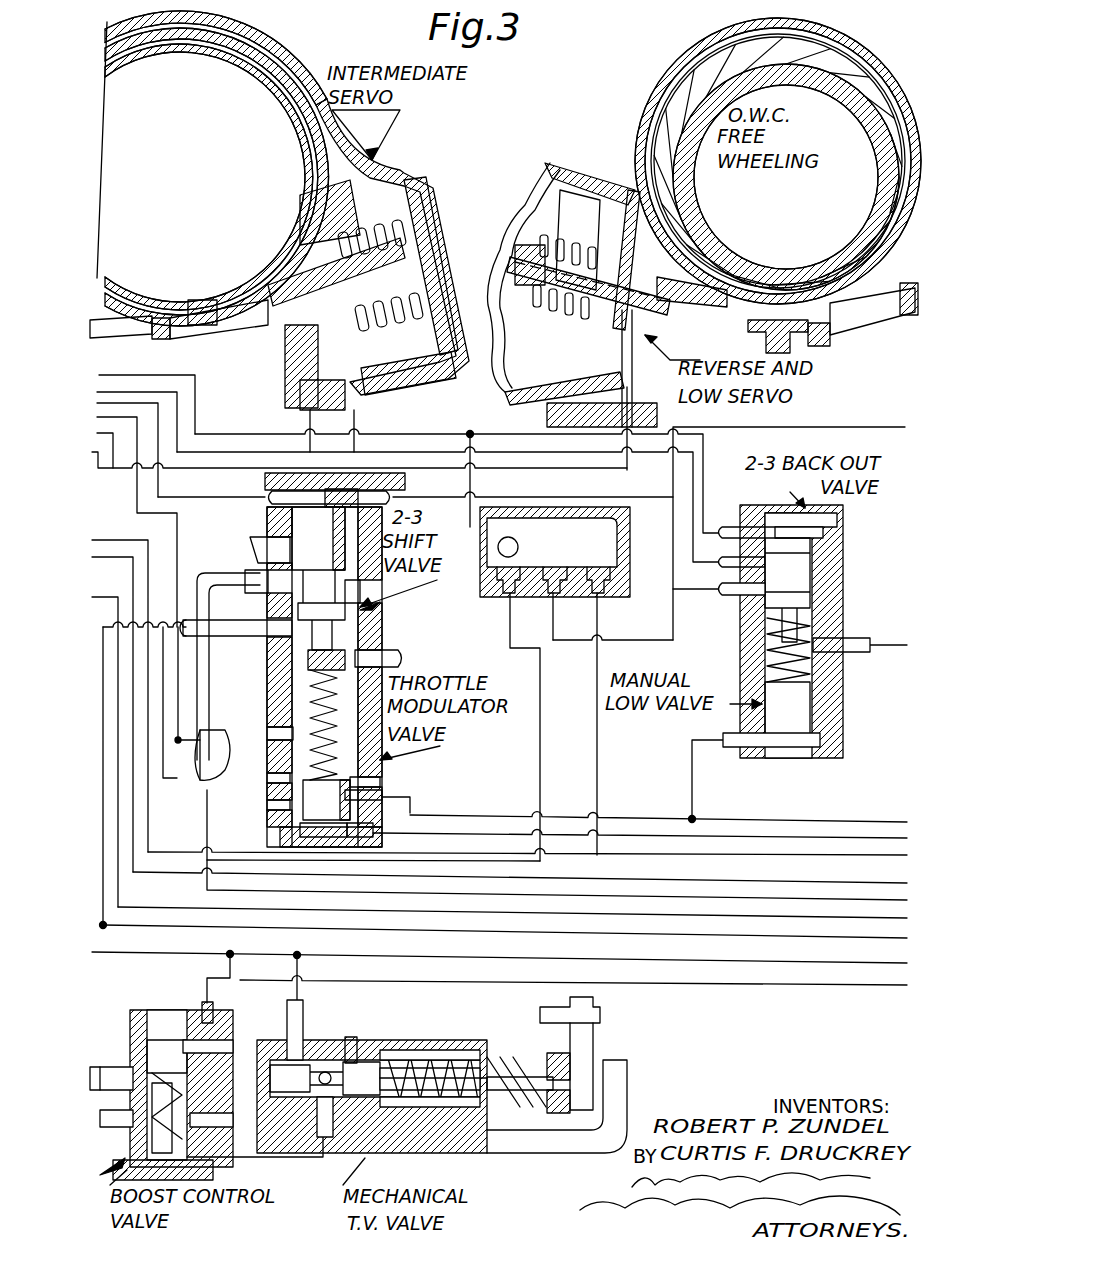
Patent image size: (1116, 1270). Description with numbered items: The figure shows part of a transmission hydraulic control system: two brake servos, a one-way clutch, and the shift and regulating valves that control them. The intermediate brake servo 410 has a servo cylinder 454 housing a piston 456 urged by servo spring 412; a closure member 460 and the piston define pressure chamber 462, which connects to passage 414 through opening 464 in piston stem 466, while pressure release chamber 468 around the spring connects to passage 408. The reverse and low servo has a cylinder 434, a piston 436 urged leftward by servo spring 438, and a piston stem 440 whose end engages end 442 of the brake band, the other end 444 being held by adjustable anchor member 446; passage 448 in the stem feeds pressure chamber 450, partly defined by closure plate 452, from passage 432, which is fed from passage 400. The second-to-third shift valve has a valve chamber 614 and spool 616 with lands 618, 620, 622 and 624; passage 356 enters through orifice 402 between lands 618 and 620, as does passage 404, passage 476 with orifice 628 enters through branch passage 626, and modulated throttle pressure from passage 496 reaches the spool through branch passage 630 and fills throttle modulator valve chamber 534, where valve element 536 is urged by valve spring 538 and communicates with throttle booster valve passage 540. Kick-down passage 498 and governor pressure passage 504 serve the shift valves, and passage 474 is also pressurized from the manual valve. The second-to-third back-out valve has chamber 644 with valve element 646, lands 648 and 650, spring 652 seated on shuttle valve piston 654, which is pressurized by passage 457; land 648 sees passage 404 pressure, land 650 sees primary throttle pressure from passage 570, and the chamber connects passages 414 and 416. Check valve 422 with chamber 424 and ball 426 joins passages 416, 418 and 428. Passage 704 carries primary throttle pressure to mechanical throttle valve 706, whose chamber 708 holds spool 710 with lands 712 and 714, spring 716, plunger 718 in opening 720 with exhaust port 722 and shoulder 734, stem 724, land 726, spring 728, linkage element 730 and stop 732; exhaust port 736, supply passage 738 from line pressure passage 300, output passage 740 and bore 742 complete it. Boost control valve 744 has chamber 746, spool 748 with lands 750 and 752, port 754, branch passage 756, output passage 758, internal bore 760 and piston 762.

The main line pressure passage 300 is at (160, 942).
The passage 356 is at (780, 1000).
The passage 400 is at (148, 910).
The orifice 402 is at (280, 650).
The passage 404 is at (118, 338).
The passage 408 is at (190, 328).
The intermediate brake servo 410 is at (455, 235).
The servo spring 412 is at (300, 250).
The passage 414 is at (300, 405).
The passage 416 is at (510, 600).
The passage 418 is at (598, 600).
The three position check valve 422 is at (600, 540).
The valve chamber 424 is at (605, 567).
The ball valve element 426 is at (518, 547).
The passage 428 is at (162, 856).
The passage 432 is at (240, 490).
The cylinder 434 is at (515, 370).
The piston 436 is at (590, 185).
The servo spring 438 is at (668, 250).
The piston stem 440 is at (690, 255).
The end of the brake band 442 is at (768, 272).
The other end of the brake band 444 is at (860, 330).
The adjustable anchor member 446 is at (870, 318).
The passage 448 is at (700, 275).
The pressure chamber 450 is at (500, 250).
The closure plate 452 is at (530, 180).
The servo cylinder 454 is at (330, 365).
The piston 456 is at (405, 215).
The passage 457 is at (692, 780).
The closure member 460 is at (398, 210).
The pressure chamber 462 is at (415, 205).
The opening 464 is at (300, 340).
The piston stem 466 is at (345, 300).
The pressure release chamber 468 is at (320, 225).
The passage 474 is at (130, 875).
The passage 476 is at (250, 590).
The modulated throttle pressure passage 496 is at (130, 433).
The kick-down pressure passage 498 is at (98, 458).
The governor pressure passage 504 is at (133, 433).
The throttle modulator valve chamber 534 is at (385, 797).
The throttle modulator valve element 536 is at (300, 825).
The valve spring 538 is at (348, 770).
The throttle booster valve passage 540 is at (378, 838).
The passage 570 is at (855, 650).
The valve chamber 614 is at (295, 660).
The 2-3 shift valve spool 616 is at (295, 598).
The valve land 618 is at (295, 700).
The valve land 620 is at (372, 610).
The valve land 622 is at (300, 540).
The valve land 624 is at (270, 494).
The branch passage 626 is at (290, 700).
The flow restricting orifice 628 is at (285, 795).
The branch passage 630 is at (230, 735).
The valve chamber 644 is at (825, 590).
The 2-3 back-out valve element 646 is at (835, 545).
The valve land 648 is at (837, 520).
The valve land 650 is at (835, 565).
The valve spring 652 is at (820, 625).
The shuttle valve piston 654 is at (820, 690).
The passage 704 is at (897, 987).
The mechanical throttle valve 706 is at (440, 1040).
The valve chamber 708 is at (350, 1037).
The valve spool 710 is at (355, 1100).
The valve land 712 is at (318, 1125).
The valve land 714 is at (375, 1100).
The valve spring 716 is at (460, 1107).
The plunger 718 is at (405, 1107).
The valve opening 720 is at (430, 1055).
The exhaust port 722 is at (380, 1040).
The stem 724 is at (525, 1060).
The valve land 726 is at (560, 1130).
The spring 728 is at (490, 1057).
The linkage element 730 is at (595, 1040).
The stop 732 is at (615, 1090).
The shoulder 734 is at (470, 1172).
The exhaust port 736 is at (340, 990).
The pressure supply passage 738 is at (303, 1015).
The mechanical throttle valve output pressure passage 740 is at (310, 1158).
The bore 742 is at (315, 1045).
The boost control valve 744 is at (155, 1040).
The valve chamber 746 is at (148, 1030).
The valve spool 748 is at (210, 1120).
The valve land 750 is at (165, 1040).
The valve land 752 is at (190, 1160).
The port 754 is at (200, 1047).
The branch passage 756 is at (213, 1010).
The passage 758 is at (140, 1060).
The internal bore 760 is at (152, 1120).
The piston 762 is at (118, 1160).